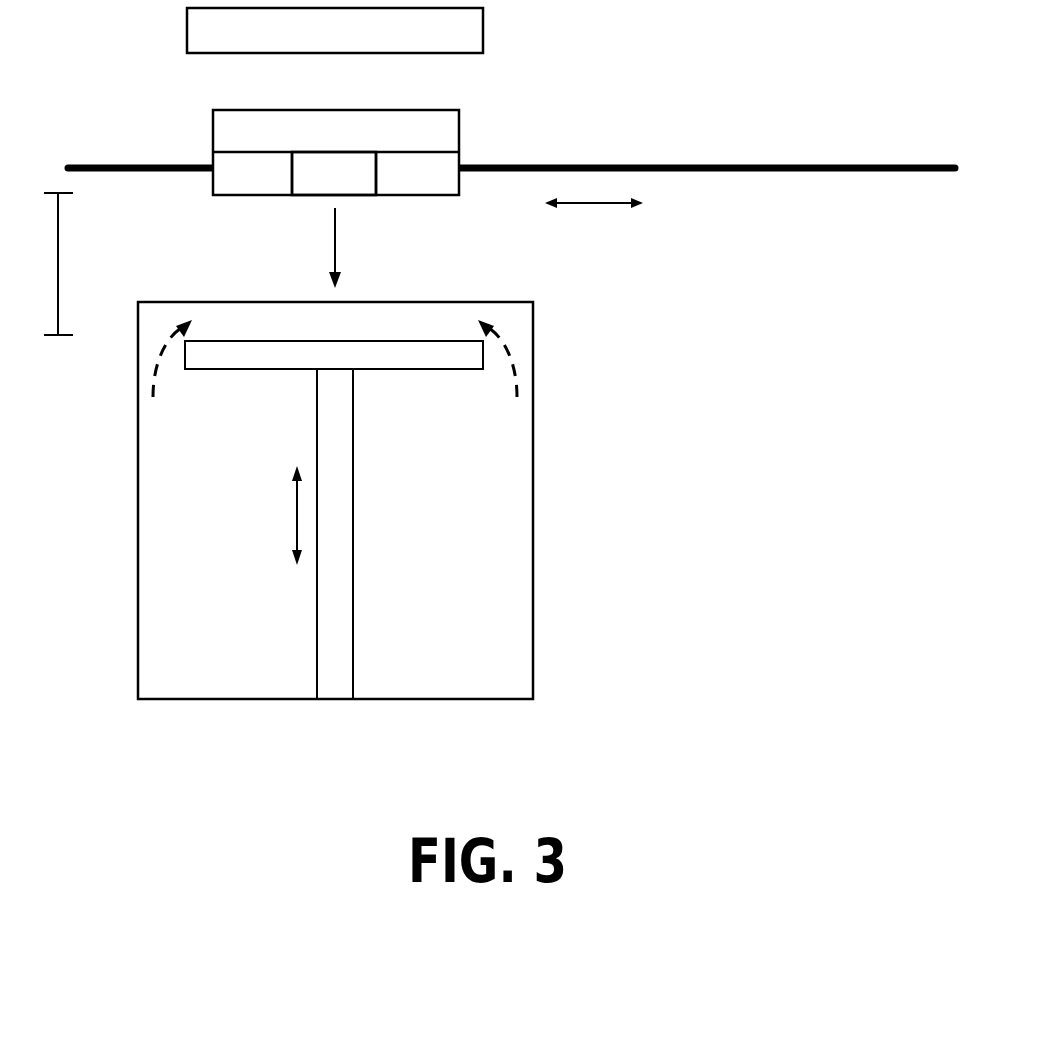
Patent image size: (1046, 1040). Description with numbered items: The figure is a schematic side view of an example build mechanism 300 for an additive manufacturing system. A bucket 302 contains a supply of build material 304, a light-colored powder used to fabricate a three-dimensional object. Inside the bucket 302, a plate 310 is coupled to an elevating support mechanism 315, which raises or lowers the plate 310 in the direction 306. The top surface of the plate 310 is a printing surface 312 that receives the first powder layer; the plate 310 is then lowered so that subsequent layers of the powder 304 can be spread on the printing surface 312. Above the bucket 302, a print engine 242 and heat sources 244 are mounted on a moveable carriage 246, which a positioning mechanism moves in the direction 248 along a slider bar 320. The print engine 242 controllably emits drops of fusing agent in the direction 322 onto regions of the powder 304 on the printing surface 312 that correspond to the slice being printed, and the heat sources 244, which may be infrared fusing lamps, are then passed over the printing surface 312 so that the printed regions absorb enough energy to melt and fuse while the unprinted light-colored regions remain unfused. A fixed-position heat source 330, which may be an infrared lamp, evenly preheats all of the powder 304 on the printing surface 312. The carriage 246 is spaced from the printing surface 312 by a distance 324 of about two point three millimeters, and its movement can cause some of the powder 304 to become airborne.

The fixed-position heat source 330 is at (358, 44).
The moveable carriage 246 is at (359, 143).
The heat source 244 is at (276, 185).
The print engine 242 is at (356, 185).
The slider bar 320 is at (688, 172).
The direction of carriage movement 248 is at (610, 205).
The distance 324 is at (58, 258).
The direction of drop emission 322 is at (335, 255).
The bucket 302 is at (533, 573).
The build material 304 is at (449, 660).
The plate 310 is at (280, 369).
The printing surface 312 is at (357, 341).
The elevating support mechanism 315 is at (353, 447).
The direction of plate movement 306 is at (297, 512).
The build mechanism 300 is at (774, 496).